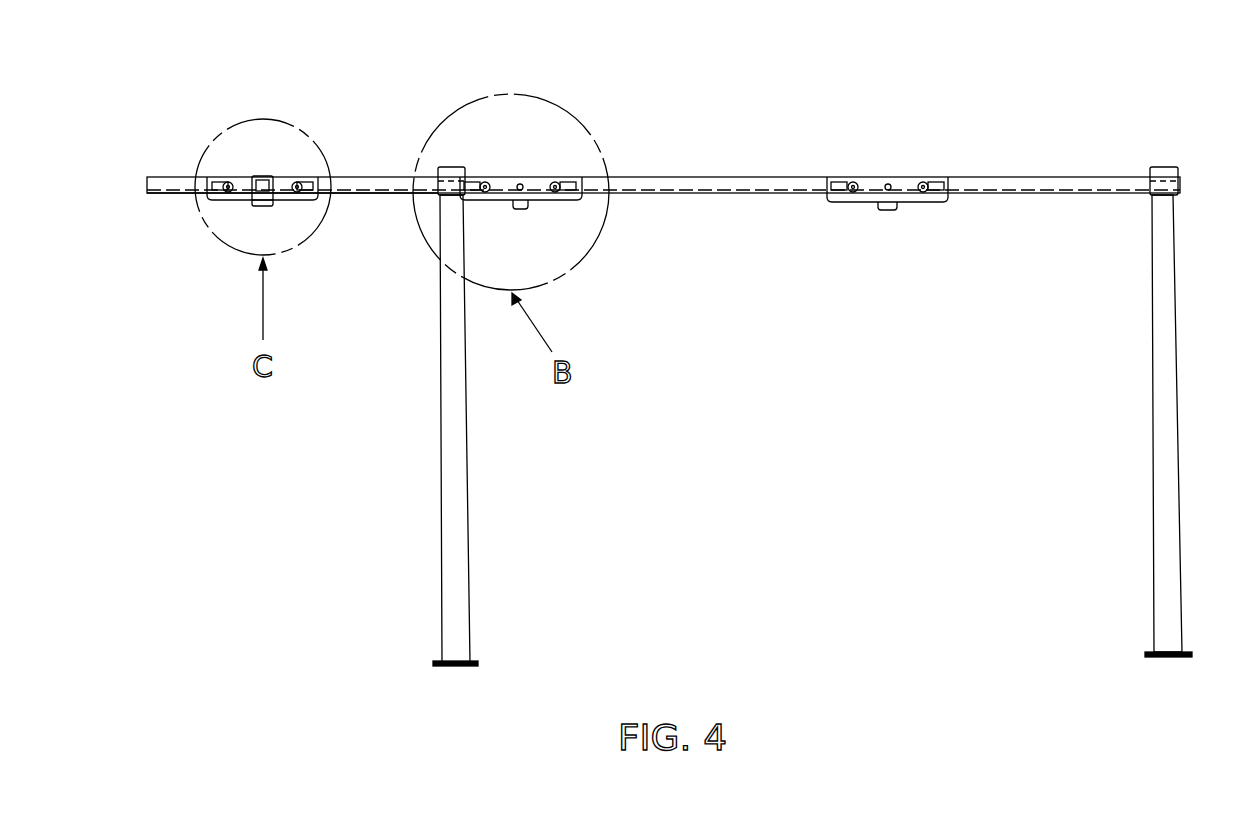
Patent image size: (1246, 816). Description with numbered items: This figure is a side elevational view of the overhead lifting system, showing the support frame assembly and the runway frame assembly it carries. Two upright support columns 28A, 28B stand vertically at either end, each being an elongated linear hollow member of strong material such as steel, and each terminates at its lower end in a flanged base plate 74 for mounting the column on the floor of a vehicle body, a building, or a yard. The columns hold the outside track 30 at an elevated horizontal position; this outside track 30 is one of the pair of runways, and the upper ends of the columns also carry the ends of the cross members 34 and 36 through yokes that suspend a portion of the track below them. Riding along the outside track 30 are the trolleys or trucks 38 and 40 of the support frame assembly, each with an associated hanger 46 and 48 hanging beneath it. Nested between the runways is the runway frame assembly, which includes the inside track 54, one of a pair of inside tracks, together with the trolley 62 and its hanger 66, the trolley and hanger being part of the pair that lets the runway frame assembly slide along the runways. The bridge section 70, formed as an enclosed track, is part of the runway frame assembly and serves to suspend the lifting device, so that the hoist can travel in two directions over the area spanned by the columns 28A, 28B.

The outside track 30 is at (705, 176).
The cross member 34 is at (452, 167).
The cross member 36 is at (1163, 166).
The trolley 38 is at (542, 175).
The trolley 40 is at (913, 178).
The hanger 46 is at (522, 210).
The hanger 48 is at (890, 208).
The inside track 54 is at (382, 195).
The trolley 62 is at (293, 182).
The hanger 66 is at (258, 202).
The bridge section 70 is at (263, 178).
The base plate 74 is at (478, 660).
The support column 28A is at (467, 505).
The support column 28B is at (1152, 425).